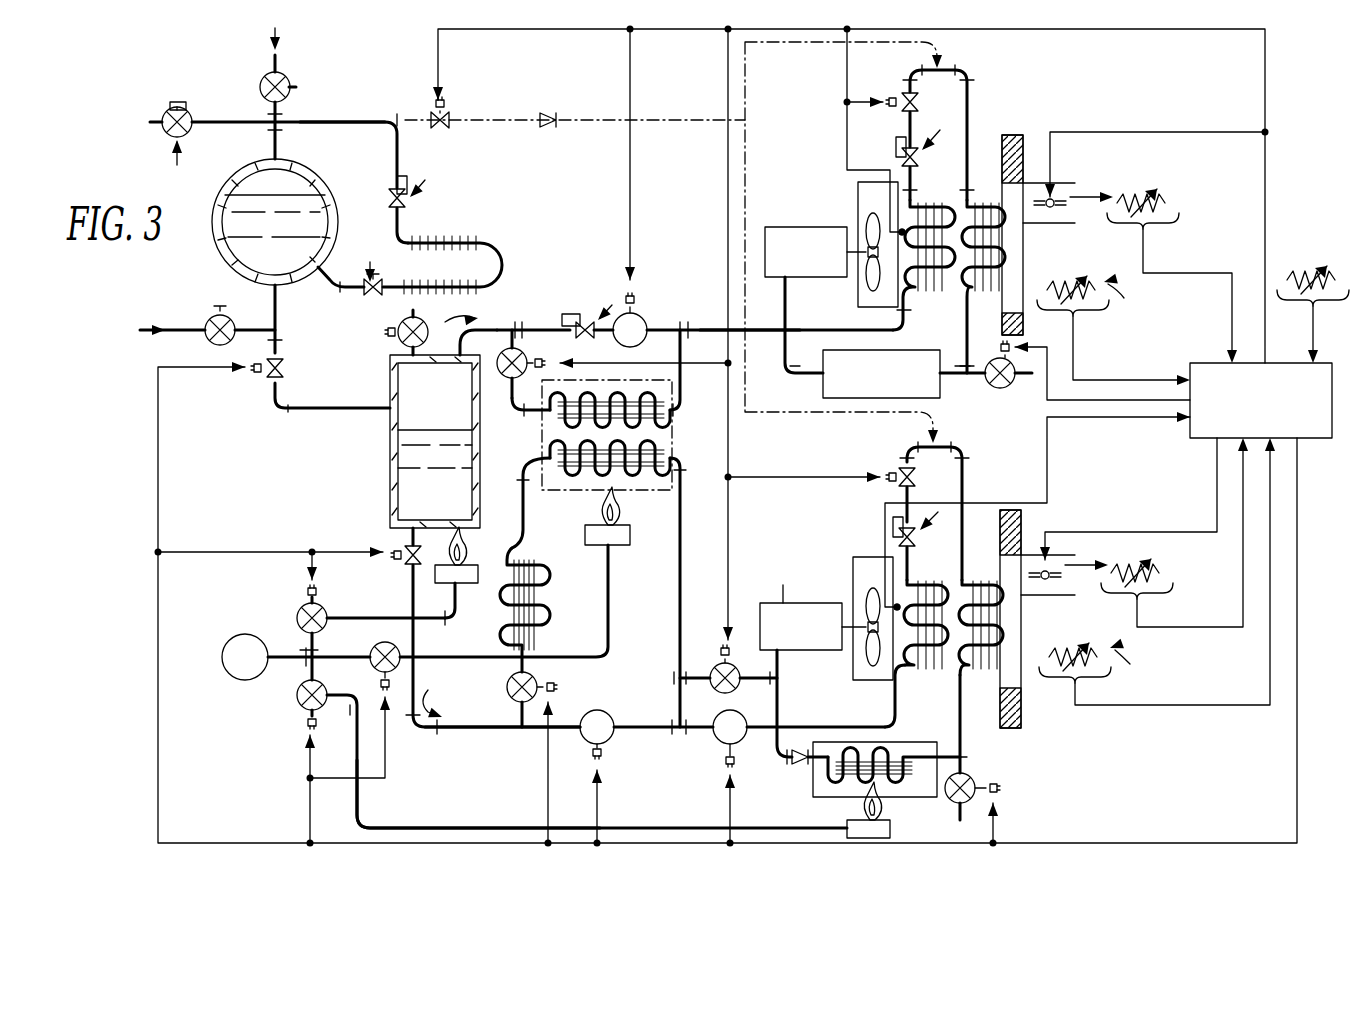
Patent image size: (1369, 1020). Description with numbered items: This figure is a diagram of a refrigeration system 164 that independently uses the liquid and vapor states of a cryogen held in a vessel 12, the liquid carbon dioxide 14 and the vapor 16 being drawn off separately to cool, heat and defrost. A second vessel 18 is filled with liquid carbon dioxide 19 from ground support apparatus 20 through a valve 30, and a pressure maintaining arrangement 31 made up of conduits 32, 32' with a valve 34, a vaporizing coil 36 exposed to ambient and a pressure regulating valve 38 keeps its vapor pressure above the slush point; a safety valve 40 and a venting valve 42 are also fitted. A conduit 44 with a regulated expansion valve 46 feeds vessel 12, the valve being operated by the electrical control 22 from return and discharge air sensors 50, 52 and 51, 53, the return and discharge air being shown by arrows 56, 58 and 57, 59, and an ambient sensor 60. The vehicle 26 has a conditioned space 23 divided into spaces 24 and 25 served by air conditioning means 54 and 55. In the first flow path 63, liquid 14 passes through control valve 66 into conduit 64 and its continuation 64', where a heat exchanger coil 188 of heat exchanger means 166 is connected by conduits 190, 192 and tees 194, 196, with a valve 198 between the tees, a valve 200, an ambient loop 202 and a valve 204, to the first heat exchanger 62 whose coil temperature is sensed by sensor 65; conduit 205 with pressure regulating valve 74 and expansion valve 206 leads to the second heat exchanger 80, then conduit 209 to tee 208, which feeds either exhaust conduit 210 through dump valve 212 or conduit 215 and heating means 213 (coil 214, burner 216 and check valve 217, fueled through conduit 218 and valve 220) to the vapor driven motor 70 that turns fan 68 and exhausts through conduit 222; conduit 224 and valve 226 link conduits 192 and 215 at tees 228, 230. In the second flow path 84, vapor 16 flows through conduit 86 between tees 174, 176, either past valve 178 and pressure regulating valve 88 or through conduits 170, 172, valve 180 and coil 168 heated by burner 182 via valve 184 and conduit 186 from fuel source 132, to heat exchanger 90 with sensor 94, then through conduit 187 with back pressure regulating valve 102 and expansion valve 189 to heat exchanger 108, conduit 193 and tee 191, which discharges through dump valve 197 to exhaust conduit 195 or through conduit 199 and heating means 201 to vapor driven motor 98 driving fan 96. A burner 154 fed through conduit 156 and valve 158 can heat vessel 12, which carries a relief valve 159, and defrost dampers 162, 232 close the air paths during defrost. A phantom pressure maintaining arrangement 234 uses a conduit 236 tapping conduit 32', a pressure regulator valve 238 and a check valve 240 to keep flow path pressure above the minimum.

The vessel 12 is at (388, 462).
The liquid carbon dioxide 14 is at (428, 428).
The vaporized carbon dioxide 16 is at (393, 380).
The second vessel 18 is at (238, 170).
The liquid carbon dioxide 19 is at (288, 195).
The ground support apparatus 20 is at (170, 307).
The electrical control 22 is at (1216, 362).
The conditioned space 23 is at (1021, 454).
The first conditioned space 24 is at (1119, 629).
The second conditioned space 25 is at (1104, 252).
The vehicle 26 is at (1006, 134).
The valve 30 is at (228, 315).
The pressure maintaining arrangement 31 is at (364, 254).
The conduit 32 is at (332, 295).
The conduit 32' is at (342, 101).
The valve 34 is at (366, 293).
The vaporizing coil 36 is at (436, 243).
The pressure regulating valve 38 is at (388, 196).
The pressure reading safety valve 40 is at (174, 104).
The venting valve 42 is at (260, 86).
The conduit 44 is at (282, 353).
The regulated expansion valve 46 is at (262, 374).
The return air temperature sensor 50 is at (1064, 650).
The return air temperature sensor 51 is at (1068, 278).
The discharge air temperature sensor 52 is at (1155, 570).
The discharge air temperature sensor 53 is at (1160, 200).
The air conditioning means 54 is at (878, 556).
The air conditioning means 55 is at (857, 196).
The return air 56 is at (1136, 662).
The return air 57 is at (1128, 289).
The discharge air 58 is at (1080, 560).
The discharge air 59 is at (1084, 192).
The ambient air temperature sensor 60 is at (1306, 268).
The first heat exchanger 62 is at (924, 642).
The first flow path 63 is at (430, 694).
The conduit 64 is at (493, 646).
The conduit 64' is at (873, 696).
The coil temperature sensor 65 is at (894, 604).
The first active cryogen control valve 66 is at (404, 560).
The fan 68 is at (862, 660).
The vapor driven motor 70 is at (762, 602).
The pressure regulating valve 74 is at (890, 520).
The second heat exchanger 80 is at (962, 672).
The second active cryogen flow path 84 is at (440, 310).
The conduit 86 is at (748, 322).
The pressure regulating valve 88 is at (580, 314).
The first heat exchanger 90 is at (906, 266).
The temperature sensor 94 is at (900, 228).
The fan 96 is at (868, 276).
The vapor driven motor 98 is at (820, 226).
The back pressure regulating valve 102 is at (892, 150).
The second heat exchanger 108 is at (1003, 250).
The fuel source 132 is at (228, 642).
The burner 154 is at (460, 566).
The conduit 156 is at (380, 616).
The valve 158 is at (298, 610).
The pressure relief valve 159 is at (390, 332).
The defrost damper 162 is at (1058, 190).
The refrigeration system 164 is at (564, 108).
The heat exchanger means 166 is at (636, 378).
The heat exchanger coil 168 is at (650, 428).
The conduit 170 is at (528, 345).
The conduit 172 is at (668, 378).
The upstream tee 174 is at (516, 322).
The downstream tee 176 is at (682, 322).
The valve 178 is at (640, 314).
The valve 180 is at (505, 388).
The burner 182 is at (584, 530).
The valve 184 is at (378, 646).
The conduit 186 is at (612, 560).
The conduit 187 is at (970, 122).
The heat exchanger coil 188 is at (660, 448).
The expansion valve 189 is at (902, 92).
The conduit 190 is at (518, 510).
The tee 191 is at (963, 360).
The conduit 192 is at (682, 532).
The conduit 193 is at (970, 350).
The upstream tee 194 is at (520, 734).
The exhaust conduit 195 is at (1022, 380).
The downstream tee 196 is at (672, 722).
The dump valve 197 is at (998, 388).
The valve 198 is at (612, 740).
The conduit 199 is at (788, 322).
The valve 200 is at (513, 692).
The heating means 201 is at (822, 385).
The ambient temperature loop 202 is at (540, 608).
The valve 204 is at (722, 744).
The conduit 205 is at (965, 492).
The expansion valve 206 is at (898, 466).
The tee 208 is at (962, 757).
The conduit 209 is at (958, 724).
The exhaust conduit 210 is at (964, 814).
The dump valve 212 is at (978, 776).
The heating means 213 is at (841, 819).
The heat exchanger coil 214 is at (888, 785).
The conduit 215 is at (780, 724).
The burner 216 is at (891, 829).
The check valve 217 is at (798, 766).
The conduit 218 is at (364, 796).
The valve 220 is at (298, 700).
The exhaust conduit 222 is at (786, 592).
The conduit 224 is at (758, 680).
The valve 226 is at (712, 660).
The tee 228 is at (672, 676).
The tee 230 is at (780, 690).
The defrost damper 232 is at (1038, 580).
The pressure maintaining arrangement 234 is at (491, 158).
The conduit 236 is at (603, 124).
The pressure regulator valve 238 is at (428, 118).
The check valve 240 is at (515, 118).